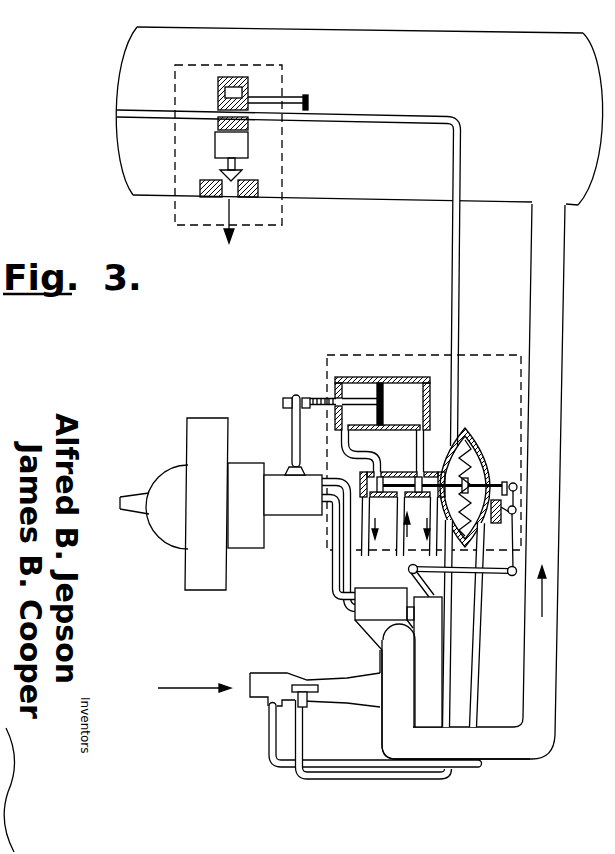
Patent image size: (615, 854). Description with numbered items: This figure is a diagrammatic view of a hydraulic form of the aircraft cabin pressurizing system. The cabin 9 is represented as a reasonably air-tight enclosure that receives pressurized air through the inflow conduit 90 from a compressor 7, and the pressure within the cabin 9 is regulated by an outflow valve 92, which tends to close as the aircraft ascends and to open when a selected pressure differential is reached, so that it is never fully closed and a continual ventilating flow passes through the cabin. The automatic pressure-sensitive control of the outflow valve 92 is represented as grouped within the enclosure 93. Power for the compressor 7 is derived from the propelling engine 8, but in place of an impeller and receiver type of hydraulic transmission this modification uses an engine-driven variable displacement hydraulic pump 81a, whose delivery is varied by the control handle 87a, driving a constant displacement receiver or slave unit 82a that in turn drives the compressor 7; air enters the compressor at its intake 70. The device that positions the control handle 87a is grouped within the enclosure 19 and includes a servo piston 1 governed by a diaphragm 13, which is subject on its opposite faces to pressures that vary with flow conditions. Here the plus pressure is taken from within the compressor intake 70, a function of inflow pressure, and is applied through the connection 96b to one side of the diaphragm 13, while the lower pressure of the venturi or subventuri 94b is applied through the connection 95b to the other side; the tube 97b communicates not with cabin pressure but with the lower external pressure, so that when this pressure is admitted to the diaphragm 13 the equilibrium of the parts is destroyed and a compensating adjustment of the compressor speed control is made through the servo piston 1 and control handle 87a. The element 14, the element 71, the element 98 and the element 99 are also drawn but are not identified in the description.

The servo piston 1 is at (381, 388).
The compressor 7 is at (400, 704).
The propelling engine 8 is at (197, 541).
The cabin 9 is at (509, 33).
The diaphragm 13 is at (468, 442).
The pivot pin 14 is at (505, 482).
The enclosure 19 is at (483, 357).
The compressor intake 70 is at (257, 697).
The partition column 71 is at (427, 671).
The variable displacement hydraulic pump 81a is at (294, 506).
The constant displacement receiver or slave unit 82a is at (366, 601).
The control handle 87a is at (292, 438).
The inflow conduit 90 is at (559, 346).
The outflow valve 92 is at (221, 173).
The enclosure 93 is at (176, 67).
The venturi or subventuri 94b is at (303, 685).
The minus pressure connection 95b is at (444, 782).
The plus pressure connection 96b is at (480, 638).
The tube 97b is at (463, 173).
The piston 98 is at (220, 95).
The valve member 99 is at (245, 122).